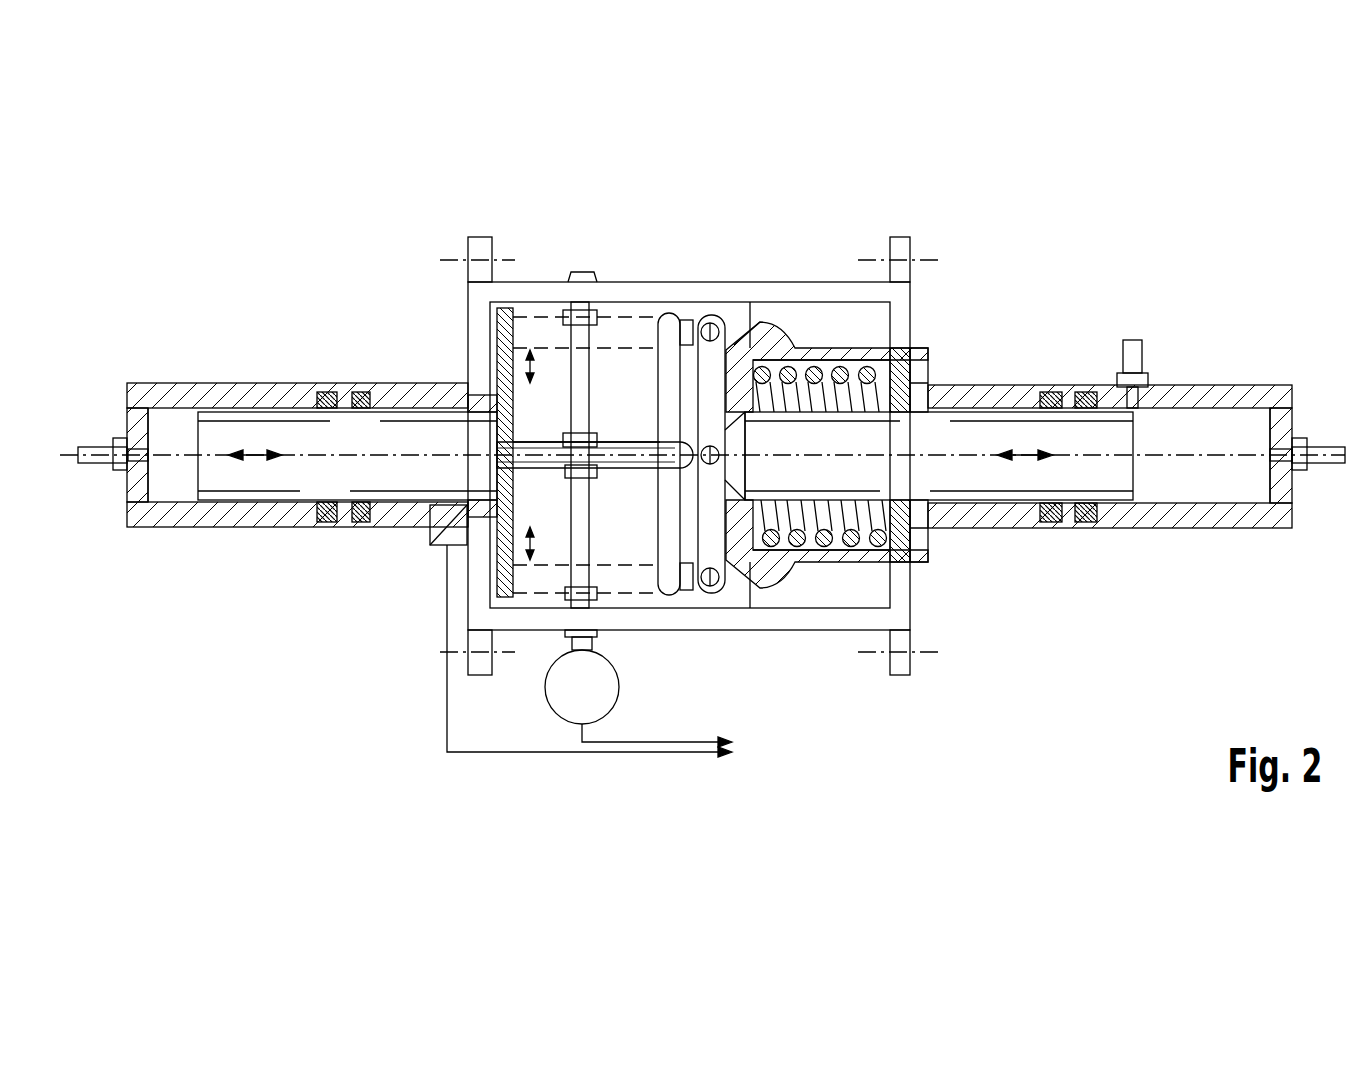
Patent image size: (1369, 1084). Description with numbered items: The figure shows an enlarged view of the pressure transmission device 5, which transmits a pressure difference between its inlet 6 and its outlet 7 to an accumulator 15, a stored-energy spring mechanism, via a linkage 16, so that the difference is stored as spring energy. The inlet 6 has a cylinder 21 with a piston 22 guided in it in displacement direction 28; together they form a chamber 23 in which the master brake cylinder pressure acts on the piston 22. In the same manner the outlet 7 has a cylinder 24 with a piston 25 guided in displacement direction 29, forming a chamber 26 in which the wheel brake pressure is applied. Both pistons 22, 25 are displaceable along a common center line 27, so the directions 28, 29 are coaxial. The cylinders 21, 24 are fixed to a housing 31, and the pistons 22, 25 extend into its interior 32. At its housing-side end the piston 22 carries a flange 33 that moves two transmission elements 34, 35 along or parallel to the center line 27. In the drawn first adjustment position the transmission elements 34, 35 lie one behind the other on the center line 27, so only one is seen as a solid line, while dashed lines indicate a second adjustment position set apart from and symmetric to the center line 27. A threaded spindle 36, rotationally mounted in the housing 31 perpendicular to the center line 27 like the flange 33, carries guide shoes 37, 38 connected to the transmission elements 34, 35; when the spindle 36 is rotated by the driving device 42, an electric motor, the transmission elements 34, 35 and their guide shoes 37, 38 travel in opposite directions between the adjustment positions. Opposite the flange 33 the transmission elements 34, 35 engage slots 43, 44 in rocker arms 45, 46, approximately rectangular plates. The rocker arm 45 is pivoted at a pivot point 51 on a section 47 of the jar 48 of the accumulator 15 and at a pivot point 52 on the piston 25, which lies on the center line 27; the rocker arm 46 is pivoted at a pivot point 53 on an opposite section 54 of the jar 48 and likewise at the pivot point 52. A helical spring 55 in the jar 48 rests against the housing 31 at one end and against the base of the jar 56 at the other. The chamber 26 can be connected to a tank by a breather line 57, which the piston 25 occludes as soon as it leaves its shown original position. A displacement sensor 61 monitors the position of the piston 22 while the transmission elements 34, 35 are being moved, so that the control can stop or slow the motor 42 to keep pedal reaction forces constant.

The pressure transmission device 5 is at (300, 668).
The inlet 6 is at (137, 384).
The outlet 7 is at (1188, 395).
The accumulator 15 is at (802, 348).
The linkage 16 is at (549, 305).
The cylinder 21 is at (208, 527).
The piston 22 is at (232, 425).
The chamber 23 is at (172, 410).
The cylinder 24 is at (1255, 528).
The piston 25 is at (950, 435).
The chamber 26 is at (1225, 420).
The center line 27 is at (78, 447).
The displacement direction 28 is at (262, 462).
The displacement direction 29 is at (1025, 462).
The housing 31 is at (750, 292).
The interior 32 is at (825, 312).
The flange 33 is at (497, 320).
The transmission element 34 is at (555, 568).
The transmission element 35 is at (648, 315).
The threaded spindle 36 is at (590, 525).
The guide shoe 37 is at (565, 440).
The guide shoe 38 is at (592, 310).
The driving device 42 is at (548, 690).
The slot 43 is at (683, 320).
The slot 44 is at (686, 560).
The rocker arm 45 is at (730, 560).
The rocker arm 46 is at (716, 320).
The section 47 is at (748, 578).
The jar 48 is at (862, 556).
The pivot point 51 is at (709, 587).
The pivot point 52 is at (710, 465).
The pivot point 53 is at (709, 322).
The section 54 is at (752, 330).
The spring 55 is at (870, 375).
The base of the jar 56 is at (755, 516).
The breather line 57 is at (1123, 352).
The displacement sensor 61 is at (430, 535).